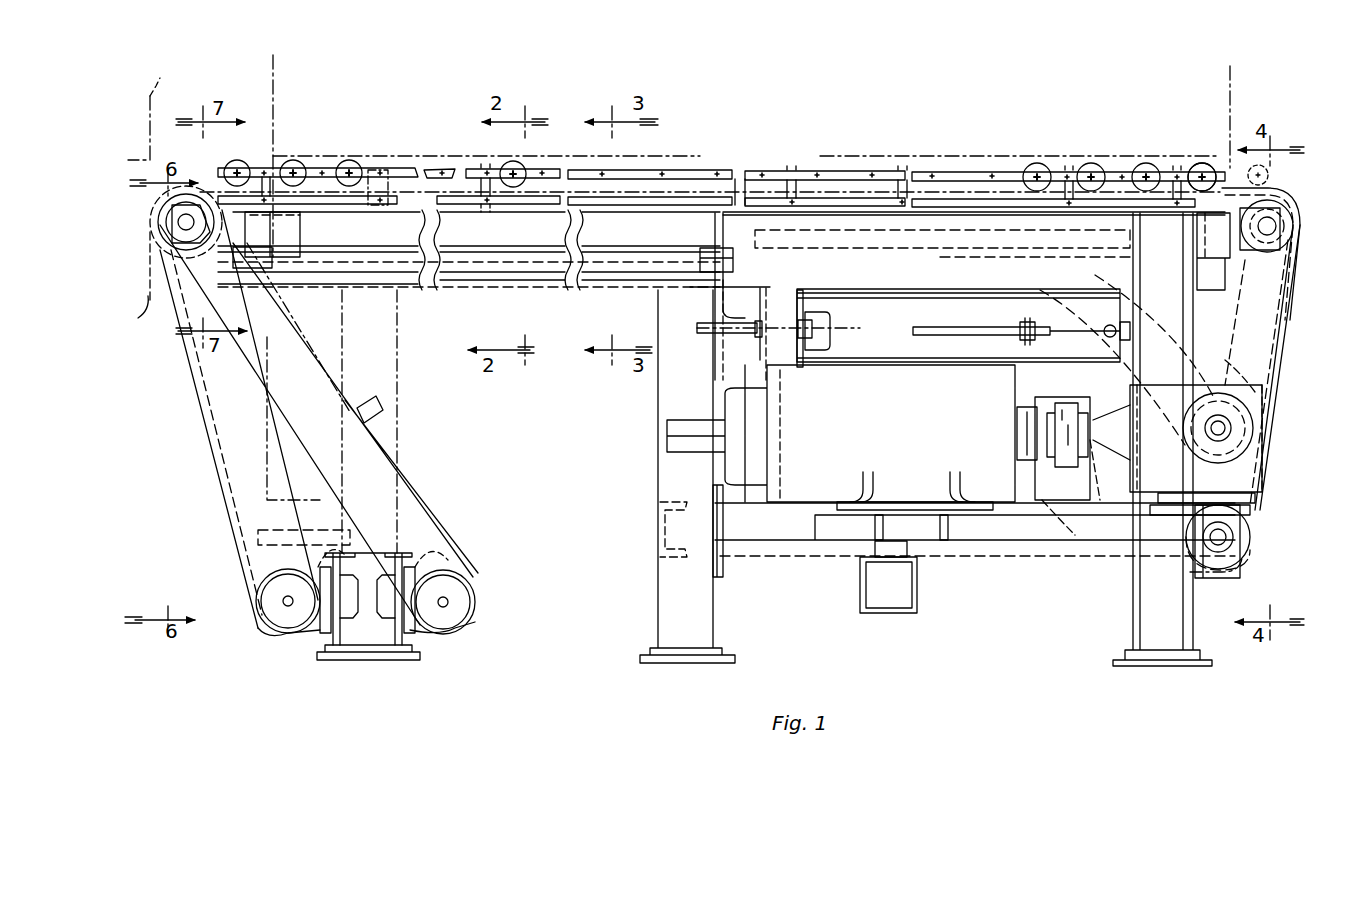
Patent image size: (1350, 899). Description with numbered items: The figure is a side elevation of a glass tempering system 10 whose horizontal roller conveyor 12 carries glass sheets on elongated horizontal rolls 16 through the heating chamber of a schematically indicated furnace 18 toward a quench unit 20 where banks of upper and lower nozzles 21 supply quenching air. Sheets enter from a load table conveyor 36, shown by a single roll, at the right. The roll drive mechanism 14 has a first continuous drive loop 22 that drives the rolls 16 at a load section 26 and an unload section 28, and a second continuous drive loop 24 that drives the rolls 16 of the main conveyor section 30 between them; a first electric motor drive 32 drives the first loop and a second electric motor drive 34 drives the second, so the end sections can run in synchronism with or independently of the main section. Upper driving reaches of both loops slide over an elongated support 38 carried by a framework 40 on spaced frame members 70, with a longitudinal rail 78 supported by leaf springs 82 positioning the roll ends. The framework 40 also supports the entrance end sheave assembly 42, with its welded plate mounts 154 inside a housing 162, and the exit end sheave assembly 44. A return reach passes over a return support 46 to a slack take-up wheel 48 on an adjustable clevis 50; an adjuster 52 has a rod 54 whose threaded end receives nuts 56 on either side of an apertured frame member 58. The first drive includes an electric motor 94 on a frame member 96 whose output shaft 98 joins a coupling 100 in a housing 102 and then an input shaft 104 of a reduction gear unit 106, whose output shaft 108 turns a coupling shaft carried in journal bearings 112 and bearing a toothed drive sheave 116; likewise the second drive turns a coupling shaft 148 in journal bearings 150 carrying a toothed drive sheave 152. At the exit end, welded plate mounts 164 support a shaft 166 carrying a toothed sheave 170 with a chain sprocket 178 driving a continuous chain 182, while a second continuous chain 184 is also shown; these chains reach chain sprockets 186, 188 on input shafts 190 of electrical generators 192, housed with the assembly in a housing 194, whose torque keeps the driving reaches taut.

The tempering system 10 is at (828, 96).
The horizontal roller conveyor 12 is at (1160, 160).
The roll drive mechanism 14 is at (1275, 488).
The horizontal rolls 16 is at (295, 158).
The furnace 18 is at (1240, 90).
The quench unit 20 is at (156, 108).
The upper and lower nozzles 21 is at (158, 84).
The first continuous drive loop 22 is at (1285, 420).
The second continuous drive loop 24 is at (1282, 470).
The load section 26 is at (968, 160).
The unload section 28 is at (345, 132).
The main conveyor section 30 is at (530, 142).
The first electric motor drive 32 is at (1025, 505).
The second electric motor drive 34 is at (1255, 544).
The load table conveyor 36 is at (1240, 165).
The elongated support 38 is at (716, 192).
The framework 40 is at (535, 276).
The entrance end sheave assembly 42 is at (1270, 255).
The exit end sheave assembly 44 is at (206, 262).
The return support 46 is at (496, 254).
The slack take-up wheel 48 is at (1050, 292).
The adjustable clevis 50 is at (1030, 360).
The adjuster 52 is at (932, 326).
The rod 54 is at (935, 338).
The nuts 56 is at (757, 338).
The apertured frame member 58 is at (775, 302).
The frame members 70 is at (720, 265).
The rail 78 is at (560, 170).
The leaf springs 82 is at (490, 200).
The electric motor 94 is at (816, 492).
The frame member 96 is at (1010, 547).
The output shaft 98 is at (1020, 445).
The coupling 100 is at (1000, 512).
The housing 102 is at (1040, 393).
The input shaft 104 is at (1098, 480).
The reduction gear unit 106 is at (1210, 385).
The output shaft 108 is at (1210, 430).
The journal bearings 112 is at (1210, 458).
The toothed drive sheave 116 is at (1240, 390).
The coupling shaft 148 is at (1200, 560).
The journal bearings 150 is at (1222, 574).
The toothed drive sheave 152 is at (1235, 556).
The welded plate mounts 154 is at (1240, 240).
The housing 162 is at (1302, 225).
The welded plate mounts 164 is at (170, 231).
The shaft 166 is at (178, 218).
The toothed sheave 170 is at (170, 240).
The chain sprocket 178 is at (168, 260).
The continuous chain 182 is at (422, 510).
The continuous chain 184 is at (232, 512).
The chain sprocket 186 is at (458, 590).
The chain sprocket 188 is at (272, 612).
The input shaft 190 is at (290, 606).
The electrical generator 192 is at (320, 580).
The housing 194 is at (222, 466).